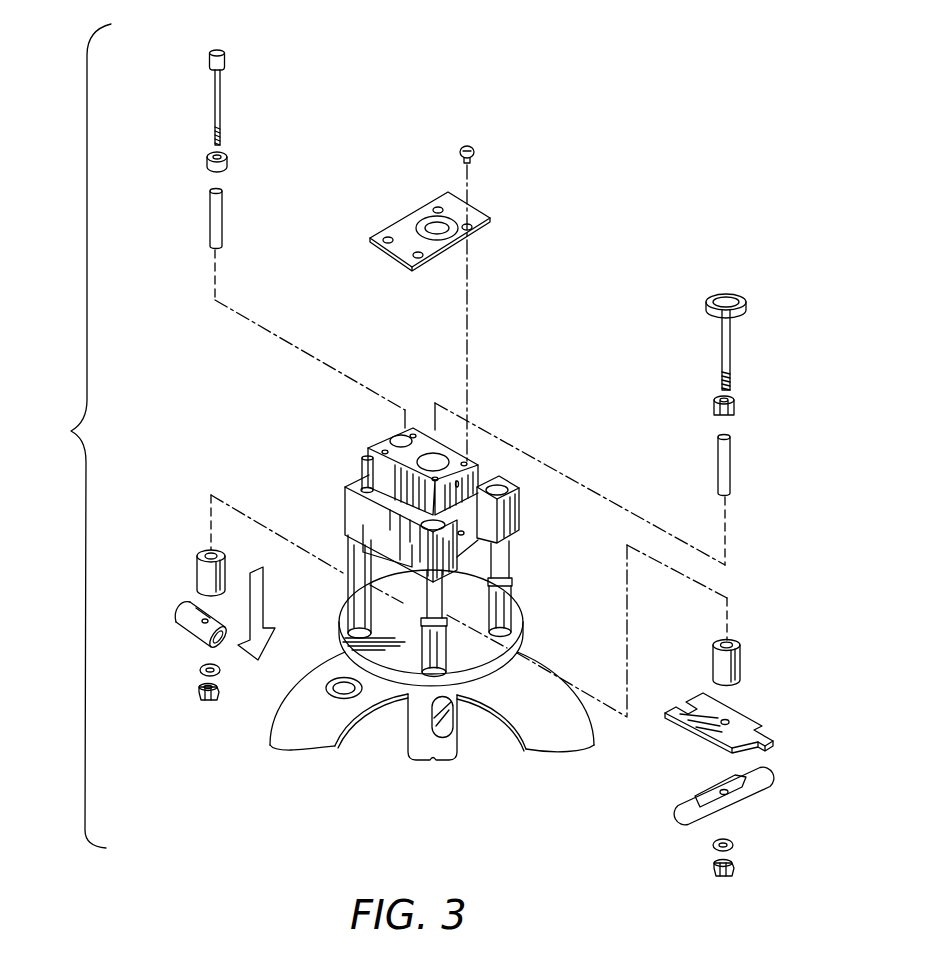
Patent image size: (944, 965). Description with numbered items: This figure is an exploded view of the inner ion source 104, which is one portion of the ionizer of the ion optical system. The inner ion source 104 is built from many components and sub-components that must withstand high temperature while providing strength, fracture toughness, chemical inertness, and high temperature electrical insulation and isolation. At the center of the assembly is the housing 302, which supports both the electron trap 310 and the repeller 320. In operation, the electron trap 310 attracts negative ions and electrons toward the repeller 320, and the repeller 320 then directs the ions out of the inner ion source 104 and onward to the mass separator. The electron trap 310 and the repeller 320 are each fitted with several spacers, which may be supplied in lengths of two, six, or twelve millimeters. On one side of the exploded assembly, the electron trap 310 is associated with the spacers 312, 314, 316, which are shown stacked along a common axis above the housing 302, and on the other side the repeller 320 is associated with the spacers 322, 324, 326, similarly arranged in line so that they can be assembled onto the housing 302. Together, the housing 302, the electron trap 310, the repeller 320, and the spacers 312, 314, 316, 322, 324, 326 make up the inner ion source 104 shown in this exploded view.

The inner ion source 104 is at (71, 430).
The housing 302 is at (392, 438).
The electron trap 310 is at (225, 58).
The spacer 312 is at (227, 160).
The spacer 314 is at (209, 216).
The spacer 316 is at (197, 568).
The repeller 320 is at (747, 302).
The spacer 322 is at (737, 407).
The spacer 324 is at (730, 480).
The spacer 326 is at (738, 667).